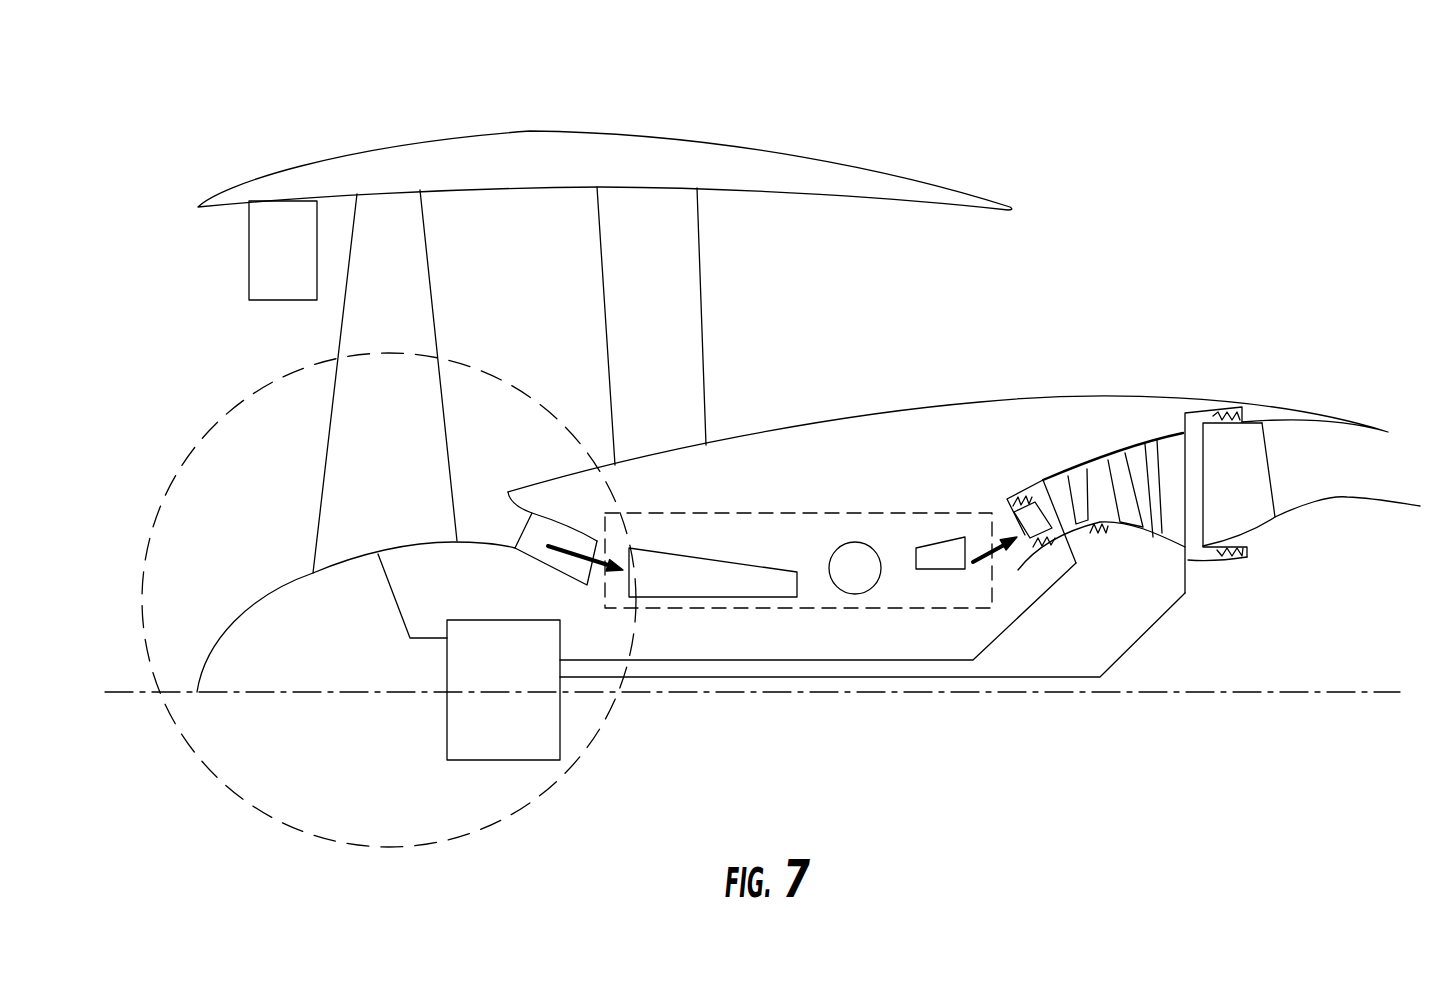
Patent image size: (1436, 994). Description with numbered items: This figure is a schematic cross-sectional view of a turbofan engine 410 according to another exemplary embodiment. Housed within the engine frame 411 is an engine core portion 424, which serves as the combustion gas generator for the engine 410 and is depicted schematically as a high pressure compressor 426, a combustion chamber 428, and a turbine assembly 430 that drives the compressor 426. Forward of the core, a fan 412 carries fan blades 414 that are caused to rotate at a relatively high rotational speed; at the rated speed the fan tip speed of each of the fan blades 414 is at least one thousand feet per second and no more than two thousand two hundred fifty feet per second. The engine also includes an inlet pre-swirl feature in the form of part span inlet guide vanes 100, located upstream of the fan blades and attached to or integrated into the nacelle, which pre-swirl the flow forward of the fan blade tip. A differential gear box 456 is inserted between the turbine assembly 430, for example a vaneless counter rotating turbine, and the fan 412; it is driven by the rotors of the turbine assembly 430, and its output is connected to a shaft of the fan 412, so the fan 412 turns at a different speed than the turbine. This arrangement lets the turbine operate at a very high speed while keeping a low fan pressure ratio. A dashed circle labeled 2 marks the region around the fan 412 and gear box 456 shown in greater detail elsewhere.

The part span inlet guide vanes 100 is at (268, 232).
The turbofan engine 410 is at (1178, 122).
The engine frame 411 is at (906, 406).
The fan 412 is at (292, 441).
The fan blades 414 is at (385, 398).
The engine core portion 424 is at (708, 513).
The high pressure compressor 426 is at (659, 597).
The combustion chamber 428 is at (855, 594).
The turbine assembly 430 is at (948, 569).
The differential gear box 456 is at (478, 716).
The detail view region 2 is at (152, 487).